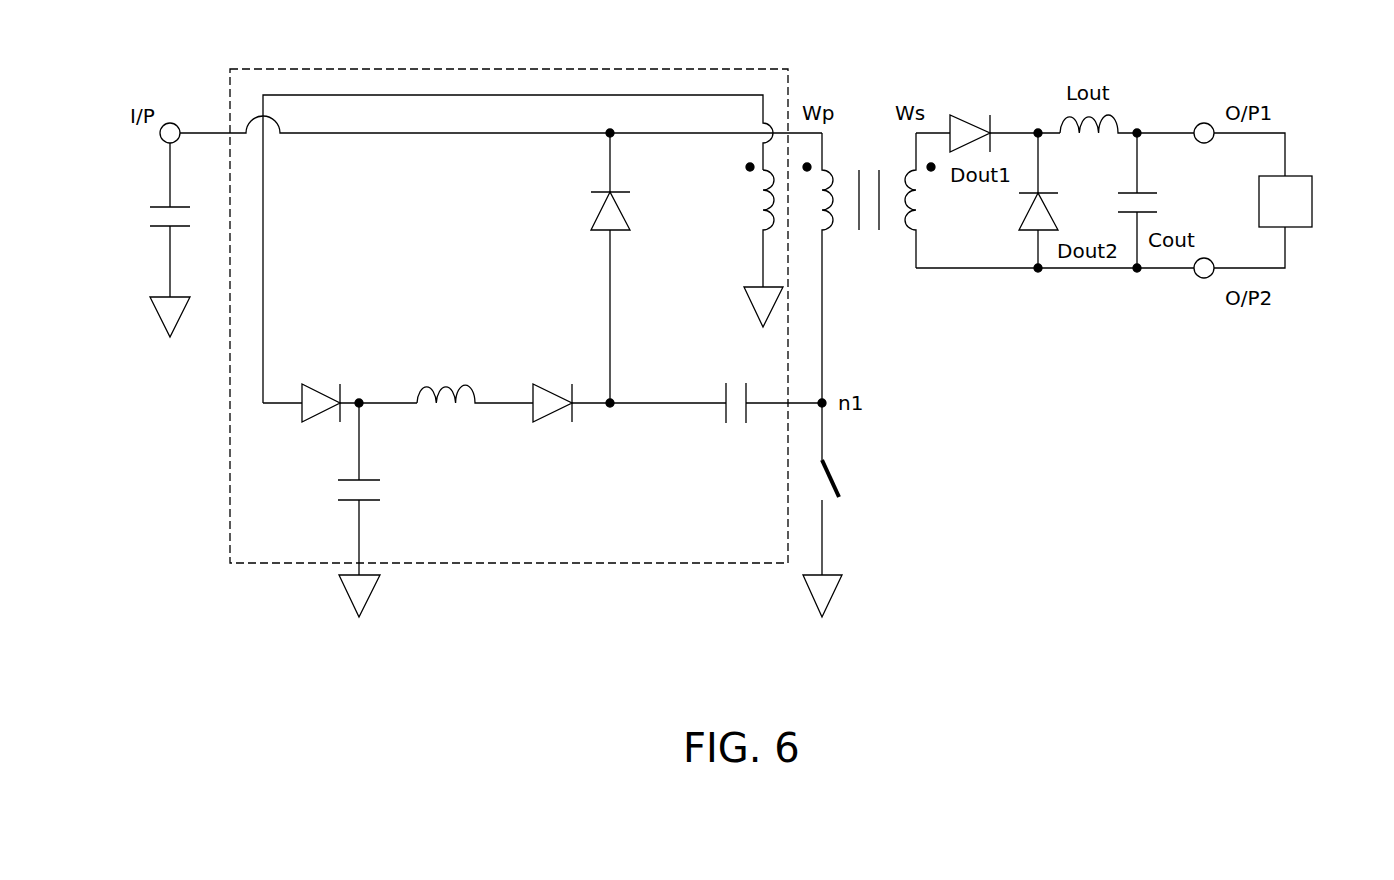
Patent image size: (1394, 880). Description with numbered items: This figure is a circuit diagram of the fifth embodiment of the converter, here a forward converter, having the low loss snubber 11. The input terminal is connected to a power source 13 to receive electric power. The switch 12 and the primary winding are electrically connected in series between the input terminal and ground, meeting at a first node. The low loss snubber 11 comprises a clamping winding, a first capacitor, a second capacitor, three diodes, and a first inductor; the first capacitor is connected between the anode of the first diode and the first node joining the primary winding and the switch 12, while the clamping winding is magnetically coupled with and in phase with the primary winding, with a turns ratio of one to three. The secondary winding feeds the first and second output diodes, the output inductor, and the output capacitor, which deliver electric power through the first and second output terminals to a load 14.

The low loss snubber 11 is at (743, 69).
The switch 12 is at (862, 471).
The power source 13 is at (152, 204).
The load 14 is at (1312, 197).